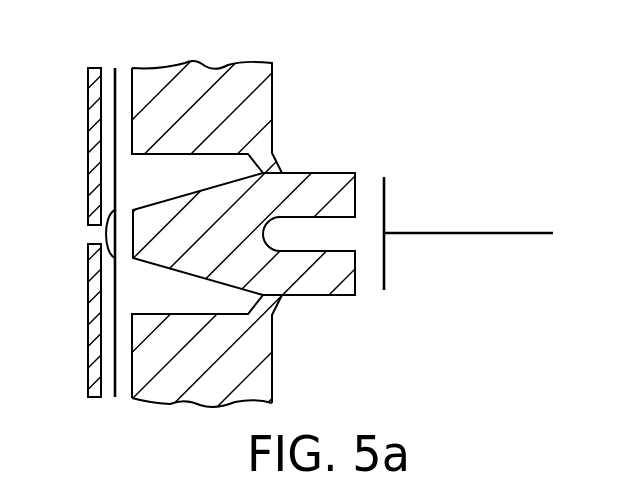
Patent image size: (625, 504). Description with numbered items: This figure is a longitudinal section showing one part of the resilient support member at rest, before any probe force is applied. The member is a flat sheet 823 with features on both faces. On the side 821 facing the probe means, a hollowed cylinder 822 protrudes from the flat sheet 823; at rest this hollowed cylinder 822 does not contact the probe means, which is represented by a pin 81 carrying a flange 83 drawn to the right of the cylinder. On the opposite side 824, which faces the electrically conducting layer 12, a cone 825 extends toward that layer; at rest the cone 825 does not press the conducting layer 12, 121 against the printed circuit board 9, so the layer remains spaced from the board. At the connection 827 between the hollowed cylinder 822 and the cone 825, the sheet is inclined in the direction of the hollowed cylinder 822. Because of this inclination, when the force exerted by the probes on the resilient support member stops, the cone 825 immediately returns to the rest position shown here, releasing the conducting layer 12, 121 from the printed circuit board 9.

The printed circuit board 9 is at (93, 68).
The electrically conducting layer 12 is at (115, 68).
The conducting layer 121 is at (108, 233).
The cone 825 is at (160, 220).
The connection 827 is at (275, 158).
The hollowed cylinder 822 is at (342, 173).
The side facing the electrically conducting layer 824 is at (133, 313).
The side facing the probe means 821 is at (273, 328).
The flat sheet 823 is at (258, 390).
The flange 83 is at (384, 190).
The pin 81 is at (522, 232).